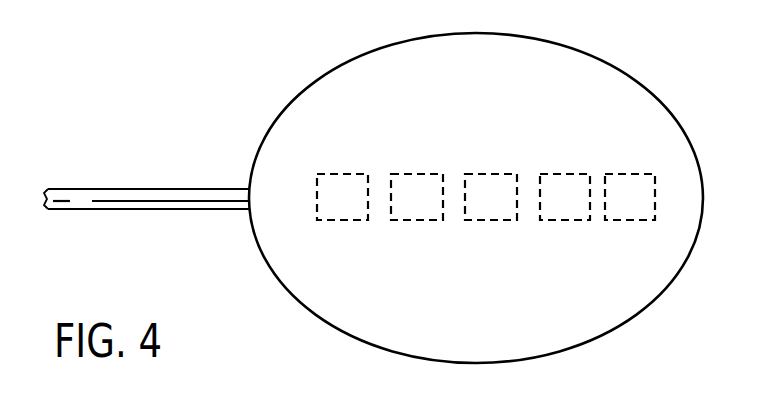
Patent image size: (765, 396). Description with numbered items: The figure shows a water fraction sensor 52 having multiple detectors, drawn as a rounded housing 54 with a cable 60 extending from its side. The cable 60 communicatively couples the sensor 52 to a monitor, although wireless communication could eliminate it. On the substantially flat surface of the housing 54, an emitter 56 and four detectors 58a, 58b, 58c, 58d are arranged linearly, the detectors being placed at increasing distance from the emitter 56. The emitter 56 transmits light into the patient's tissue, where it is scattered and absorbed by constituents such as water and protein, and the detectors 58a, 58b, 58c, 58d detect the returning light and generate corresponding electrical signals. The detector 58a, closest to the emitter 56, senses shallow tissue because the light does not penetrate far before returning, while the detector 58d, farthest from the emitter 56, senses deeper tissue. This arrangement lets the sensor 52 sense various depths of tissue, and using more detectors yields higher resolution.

The water fraction sensor 52 is at (304, 44).
The housing 54 is at (543, 39).
The emitter 56 is at (632, 222).
The detector 58a is at (565, 222).
The detector 58b is at (490, 222).
The detector 58c is at (415, 222).
The detector 58d is at (342, 222).
The cable 60 is at (147, 189).